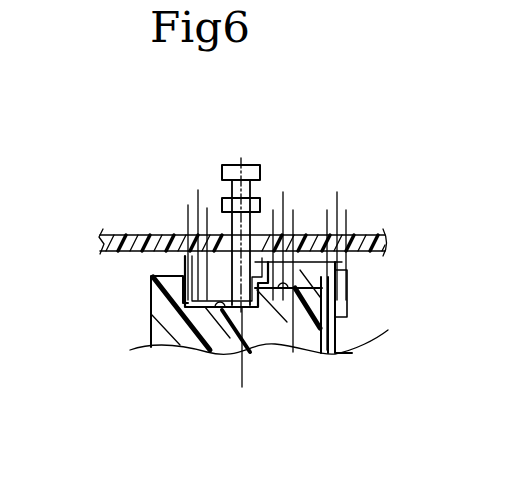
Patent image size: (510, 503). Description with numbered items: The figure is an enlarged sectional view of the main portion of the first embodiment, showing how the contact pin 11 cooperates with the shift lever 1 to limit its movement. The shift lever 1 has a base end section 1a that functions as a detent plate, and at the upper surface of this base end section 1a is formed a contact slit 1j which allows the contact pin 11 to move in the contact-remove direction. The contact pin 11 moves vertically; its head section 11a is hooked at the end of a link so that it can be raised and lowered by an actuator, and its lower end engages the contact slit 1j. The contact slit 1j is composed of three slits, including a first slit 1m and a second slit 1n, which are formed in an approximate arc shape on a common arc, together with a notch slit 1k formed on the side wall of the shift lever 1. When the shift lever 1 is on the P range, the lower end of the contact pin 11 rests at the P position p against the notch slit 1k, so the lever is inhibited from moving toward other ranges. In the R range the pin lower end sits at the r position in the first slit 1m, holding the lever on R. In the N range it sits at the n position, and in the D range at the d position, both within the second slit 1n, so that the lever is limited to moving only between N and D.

The shift lever 1 is at (150, 300).
The base end section 1a is at (150, 327).
The contact slit 1j is at (218, 282).
The notch slit 1k is at (336, 318).
The first slit 1m is at (300, 350).
The second slit 1n is at (208, 352).
The contact pin 11 is at (233, 221).
The head section 11a is at (252, 164).
The d position d is at (193, 219).
The r position r is at (283, 248).
The P position p is at (334, 247).
The n position n is at (243, 370).